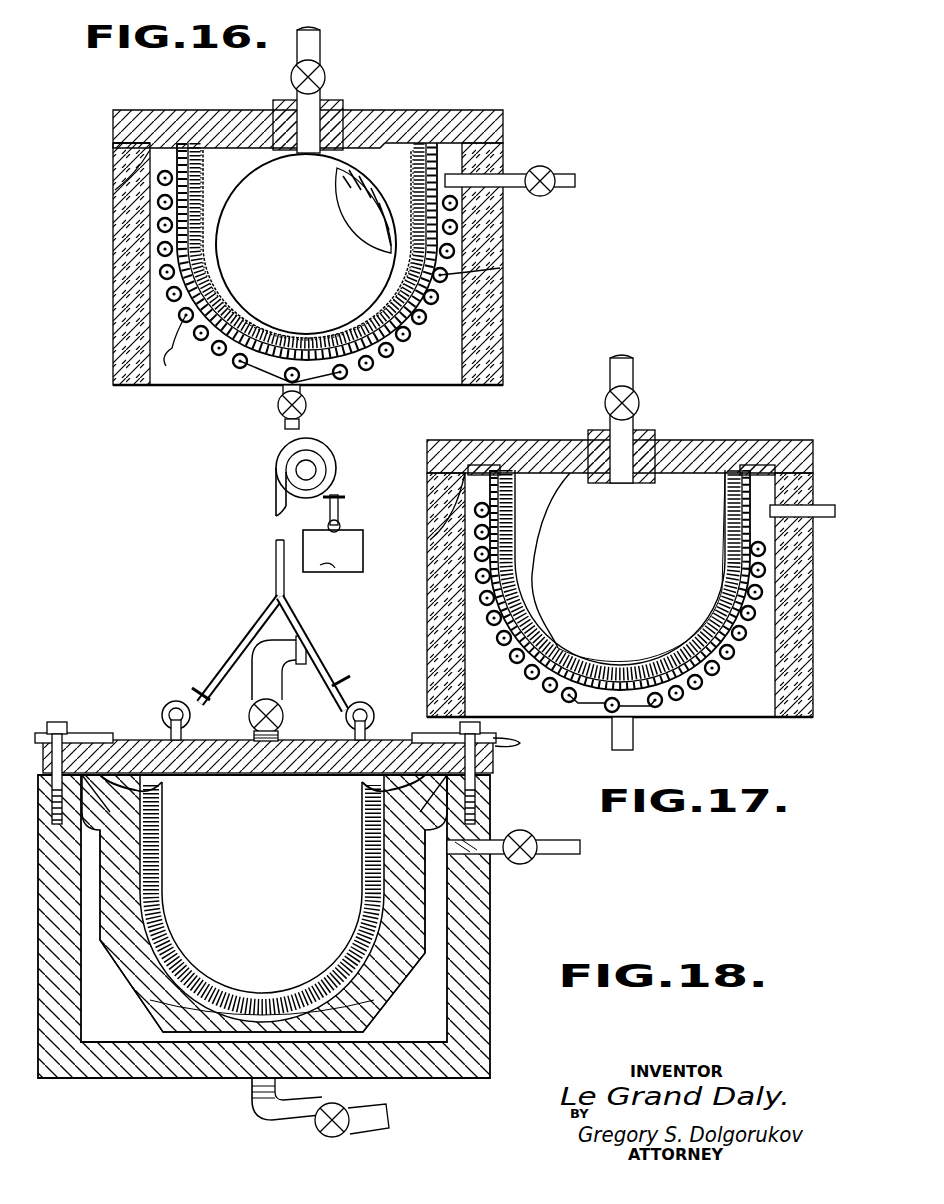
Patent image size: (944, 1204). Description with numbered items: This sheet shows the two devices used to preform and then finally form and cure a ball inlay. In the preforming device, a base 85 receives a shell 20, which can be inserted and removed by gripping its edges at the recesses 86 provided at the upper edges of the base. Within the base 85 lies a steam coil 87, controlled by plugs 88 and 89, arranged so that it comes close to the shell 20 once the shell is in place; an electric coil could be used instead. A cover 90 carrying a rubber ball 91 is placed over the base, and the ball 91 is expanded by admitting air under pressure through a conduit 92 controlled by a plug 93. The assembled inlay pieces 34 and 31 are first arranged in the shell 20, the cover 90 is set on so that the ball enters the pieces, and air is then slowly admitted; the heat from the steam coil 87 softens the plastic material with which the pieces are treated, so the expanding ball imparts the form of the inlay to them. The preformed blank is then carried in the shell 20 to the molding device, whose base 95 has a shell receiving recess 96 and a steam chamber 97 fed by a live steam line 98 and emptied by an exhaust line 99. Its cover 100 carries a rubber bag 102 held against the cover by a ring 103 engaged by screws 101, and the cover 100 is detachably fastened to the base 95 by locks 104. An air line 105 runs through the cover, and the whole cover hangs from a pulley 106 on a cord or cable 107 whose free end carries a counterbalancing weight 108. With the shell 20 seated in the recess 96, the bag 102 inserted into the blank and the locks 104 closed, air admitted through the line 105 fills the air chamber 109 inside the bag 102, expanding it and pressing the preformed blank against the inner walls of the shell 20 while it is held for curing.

In FIG. 16, the shell 20 is at (158, 250).
In FIG. 17, the shell 20 is at (535, 676).
In FIG. 18, the shell 20 is at (380, 972).
In FIG. 16, the inlay piece 31 is at (408, 290).
In FIG. 16, the inlay piece 34 is at (420, 262).
In FIG. 16, the base 85 is at (487, 314).
In FIG. 17, the base 85 is at (440, 592).
In FIG. 16, the recesses 86 is at (140, 150).
In FIG. 17, the recesses 86 is at (440, 485).
In FIG. 16, the steam coil 87 is at (512, 248).
In FIG. 17, the steam coil 87 is at (708, 664).
In FIG. 16, the plug 88 is at (545, 166).
In FIG. 16, the plug 89 is at (278, 406).
In FIG. 16, the cover 90 is at (405, 118).
In FIG. 17, the cover 90 is at (735, 445).
In FIG. 16, the rubber ball 91 is at (375, 192).
In FIG. 17, the rubber ball 91 is at (540, 478).
In FIG. 16, the conduit 92 is at (320, 38).
In FIG. 17, the conduit 92 is at (633, 368).
In FIG. 16, the plug 93 is at (323, 80).
In FIG. 17, the plug 93 is at (638, 406).
In FIG. 18, the base 95 is at (478, 908).
In FIG. 18, the shell receiving recess 96 is at (158, 848).
In FIG. 18, the steam chamber 97 is at (440, 940).
In FIG. 18, the live steam line 98 is at (560, 845).
In FIG. 18, the exhaust line 99 is at (258, 1110).
In FIG. 18, the cover 100 is at (125, 740).
In FIG. 18, the screws 101 is at (98, 768).
In FIG. 18, the rubber bag 102 is at (162, 870).
In FIG. 18, the ring 103 is at (398, 798).
In FIG. 18, the locks 104 is at (57, 722).
In FIG. 18, the air line 105 is at (302, 660).
In FIG. 18, the pulley 106 is at (292, 480).
In FIG. 18, the cord or cable 107 is at (274, 545).
In FIG. 18, the counterbalancing weight 108 is at (322, 575).
In FIG. 18, the air chamber 109 is at (282, 908).